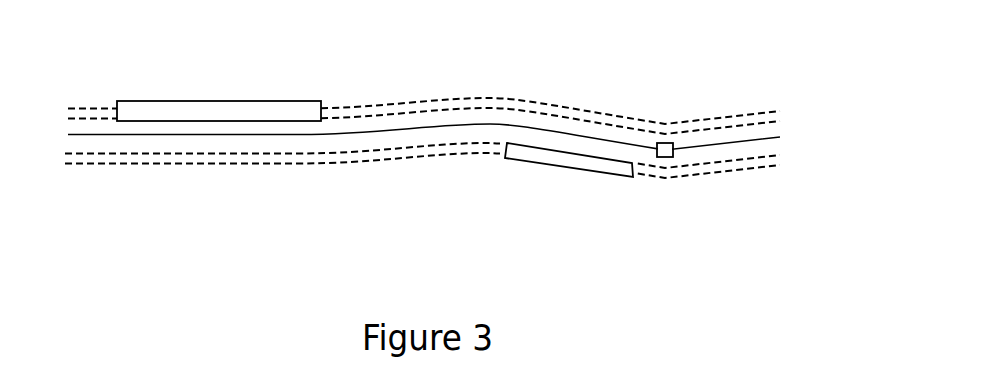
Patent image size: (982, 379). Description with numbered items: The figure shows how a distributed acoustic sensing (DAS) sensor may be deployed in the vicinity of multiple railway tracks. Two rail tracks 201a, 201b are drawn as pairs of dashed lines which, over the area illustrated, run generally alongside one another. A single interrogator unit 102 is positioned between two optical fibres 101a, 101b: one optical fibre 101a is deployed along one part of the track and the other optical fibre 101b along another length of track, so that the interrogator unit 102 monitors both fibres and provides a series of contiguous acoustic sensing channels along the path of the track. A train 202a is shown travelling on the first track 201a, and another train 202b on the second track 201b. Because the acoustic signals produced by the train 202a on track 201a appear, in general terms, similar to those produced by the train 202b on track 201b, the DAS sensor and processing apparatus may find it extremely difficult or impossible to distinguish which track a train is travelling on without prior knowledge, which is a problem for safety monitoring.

The optical fibre 101a is at (270, 135).
The optical fibre 101b is at (753, 138).
The interrogator unit 102 is at (673, 143).
The rail track 201a is at (618, 118).
The rail track 201b is at (166, 162).
The train 202a is at (163, 100).
The train 202b is at (568, 168).